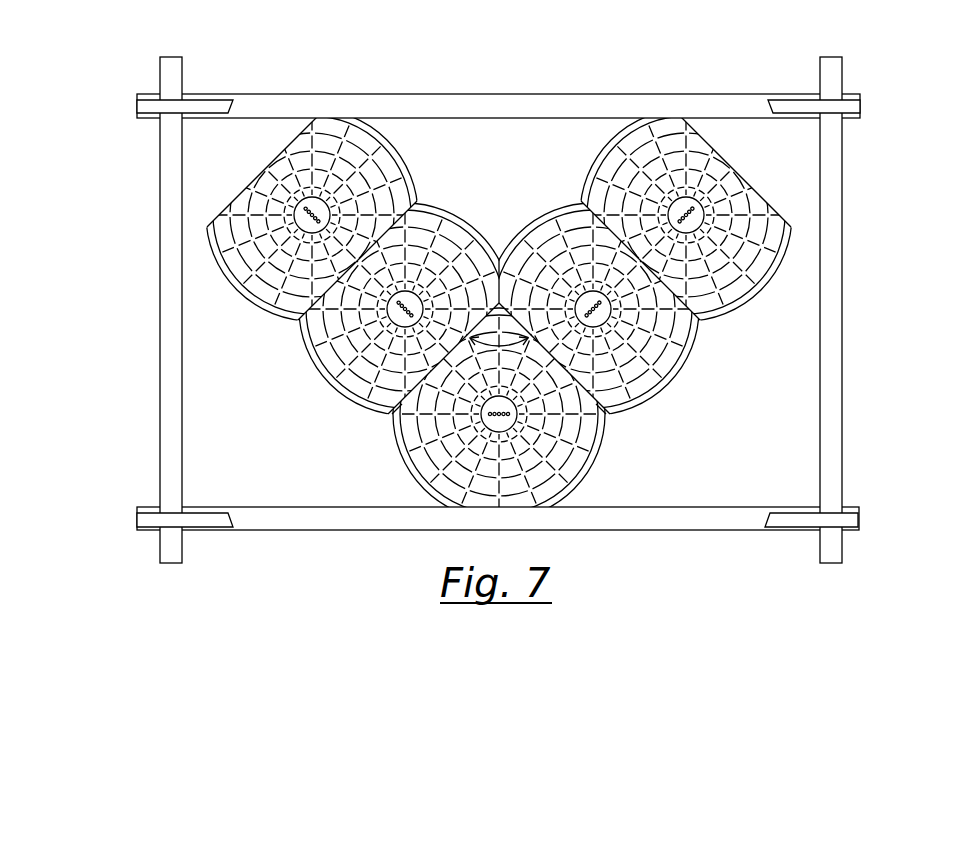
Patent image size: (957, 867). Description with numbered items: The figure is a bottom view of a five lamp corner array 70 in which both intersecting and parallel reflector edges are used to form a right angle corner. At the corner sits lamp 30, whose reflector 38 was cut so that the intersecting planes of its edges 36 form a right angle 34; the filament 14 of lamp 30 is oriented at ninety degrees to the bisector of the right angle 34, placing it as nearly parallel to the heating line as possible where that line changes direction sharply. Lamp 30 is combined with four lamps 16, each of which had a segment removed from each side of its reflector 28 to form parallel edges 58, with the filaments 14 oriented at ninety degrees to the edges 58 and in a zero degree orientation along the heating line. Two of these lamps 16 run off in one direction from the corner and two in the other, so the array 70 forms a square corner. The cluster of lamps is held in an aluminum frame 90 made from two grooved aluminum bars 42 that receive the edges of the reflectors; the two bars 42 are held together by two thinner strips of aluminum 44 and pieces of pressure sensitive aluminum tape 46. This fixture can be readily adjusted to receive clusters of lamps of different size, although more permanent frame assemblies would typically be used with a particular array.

The filament 14 is at (710, 163).
The lamp 16 is at (740, 232).
The reflector 28 is at (541, 230).
The lamp 30 is at (523, 414).
The right angle 34 is at (418, 404).
The edges 36 is at (391, 415).
The reflector 38 is at (430, 487).
The aluminum bar 42 is at (738, 110).
The strip of aluminum 44 is at (839, 222).
The pressure sensitive aluminum tape 46 is at (137, 106).
The parallel edges 58 is at (760, 192).
The corner array 70 is at (495, 305).
The aluminum frame 90 is at (495, 310).